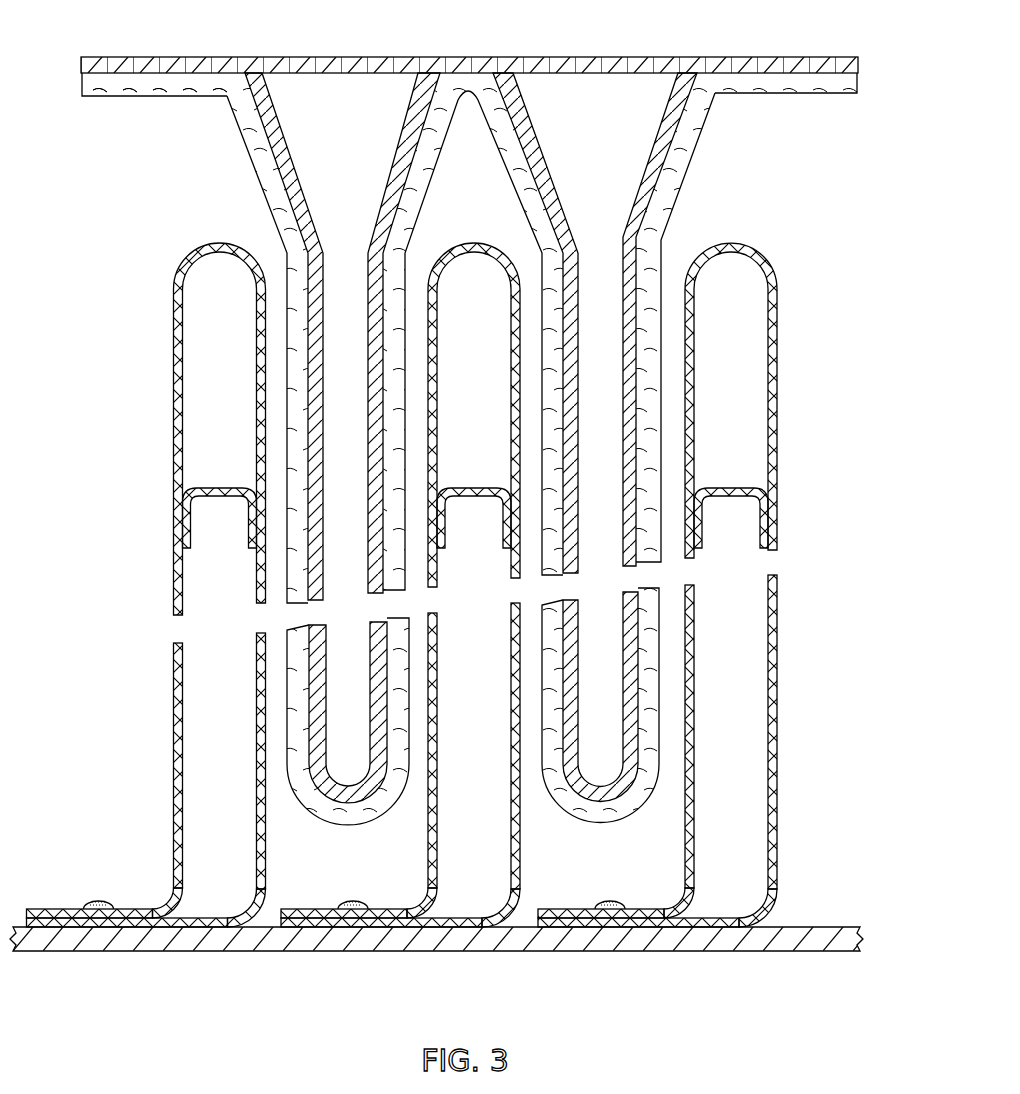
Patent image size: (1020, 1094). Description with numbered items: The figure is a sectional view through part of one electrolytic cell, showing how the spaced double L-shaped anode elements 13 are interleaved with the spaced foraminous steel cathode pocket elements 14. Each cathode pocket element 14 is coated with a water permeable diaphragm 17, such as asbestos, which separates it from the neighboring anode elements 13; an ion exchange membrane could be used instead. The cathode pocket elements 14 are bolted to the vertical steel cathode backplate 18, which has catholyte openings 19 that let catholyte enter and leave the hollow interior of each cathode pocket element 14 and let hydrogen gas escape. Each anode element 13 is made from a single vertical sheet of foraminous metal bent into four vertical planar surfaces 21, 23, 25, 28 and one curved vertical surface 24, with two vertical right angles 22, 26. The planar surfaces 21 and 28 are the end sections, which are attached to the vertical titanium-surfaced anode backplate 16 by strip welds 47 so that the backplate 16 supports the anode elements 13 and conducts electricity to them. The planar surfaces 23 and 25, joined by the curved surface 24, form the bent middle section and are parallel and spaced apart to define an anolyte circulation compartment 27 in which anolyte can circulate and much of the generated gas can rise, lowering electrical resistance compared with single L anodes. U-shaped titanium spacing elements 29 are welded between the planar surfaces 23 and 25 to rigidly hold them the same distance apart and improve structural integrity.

The anode element 13 is at (482, 403).
The cathode pocket element 14 is at (400, 140).
The anode backplate 16 is at (335, 952).
The diaphragm 17 is at (244, 138).
The cathode backplate 18 is at (205, 57).
The catholyte opening 19 is at (385, 64).
The first vertical planar surface 21 is at (195, 930).
The vertical right angle 22 is at (257, 892).
The second vertical planar surface 23 is at (257, 681).
The curved vertical surface 24 is at (188, 254).
The third vertical planar surface 25 is at (173, 698).
The vertical right angle 26 is at (172, 892).
The anolyte circulation compartment 27 is at (223, 282).
The fourth vertical planar surface 28 is at (37, 908).
The U-shaped spacing element 29 is at (213, 489).
The strip weld 47 is at (97, 900).